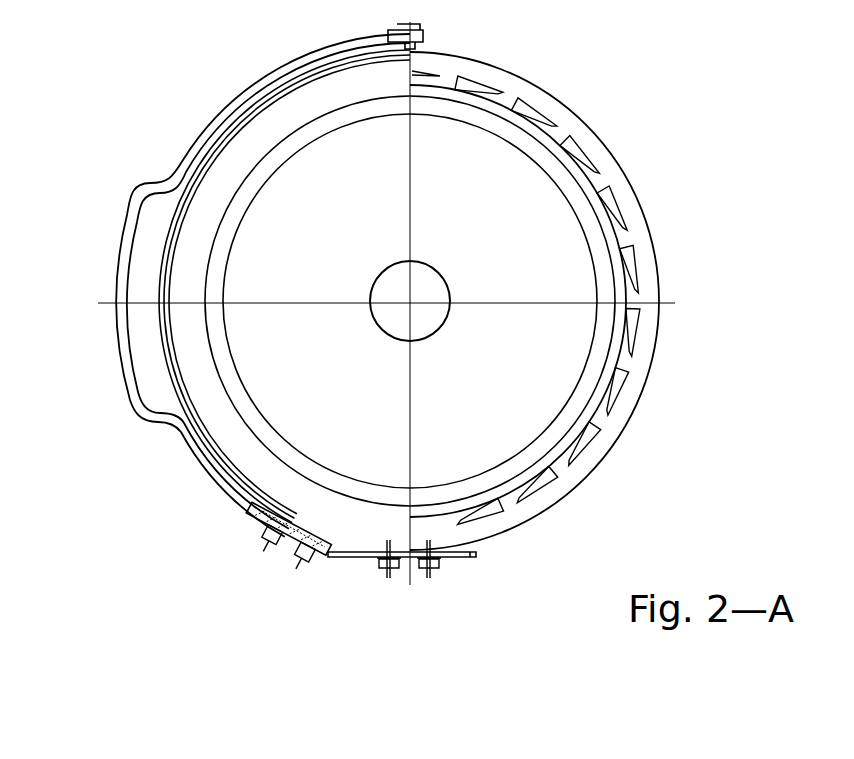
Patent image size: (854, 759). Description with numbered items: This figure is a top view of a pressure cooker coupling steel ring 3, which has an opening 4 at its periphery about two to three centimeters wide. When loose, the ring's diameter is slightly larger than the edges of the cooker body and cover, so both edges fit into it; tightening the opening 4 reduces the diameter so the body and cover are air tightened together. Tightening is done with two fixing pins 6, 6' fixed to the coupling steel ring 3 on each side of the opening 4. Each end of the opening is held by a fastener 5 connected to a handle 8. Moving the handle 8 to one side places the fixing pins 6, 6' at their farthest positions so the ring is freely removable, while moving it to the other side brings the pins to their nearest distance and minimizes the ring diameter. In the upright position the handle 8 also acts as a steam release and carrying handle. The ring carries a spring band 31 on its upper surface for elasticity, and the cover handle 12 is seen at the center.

The coupling steel ring 3 is at (613, 451).
The opening 4 is at (407, 527).
The fastener 5 is at (470, 560).
The fixing pin 6 is at (368, 581).
The fixing pin 6' is at (331, 574).
The handle 8 is at (181, 431).
The handle 12 is at (430, 284).
The spring band 31 is at (633, 352).